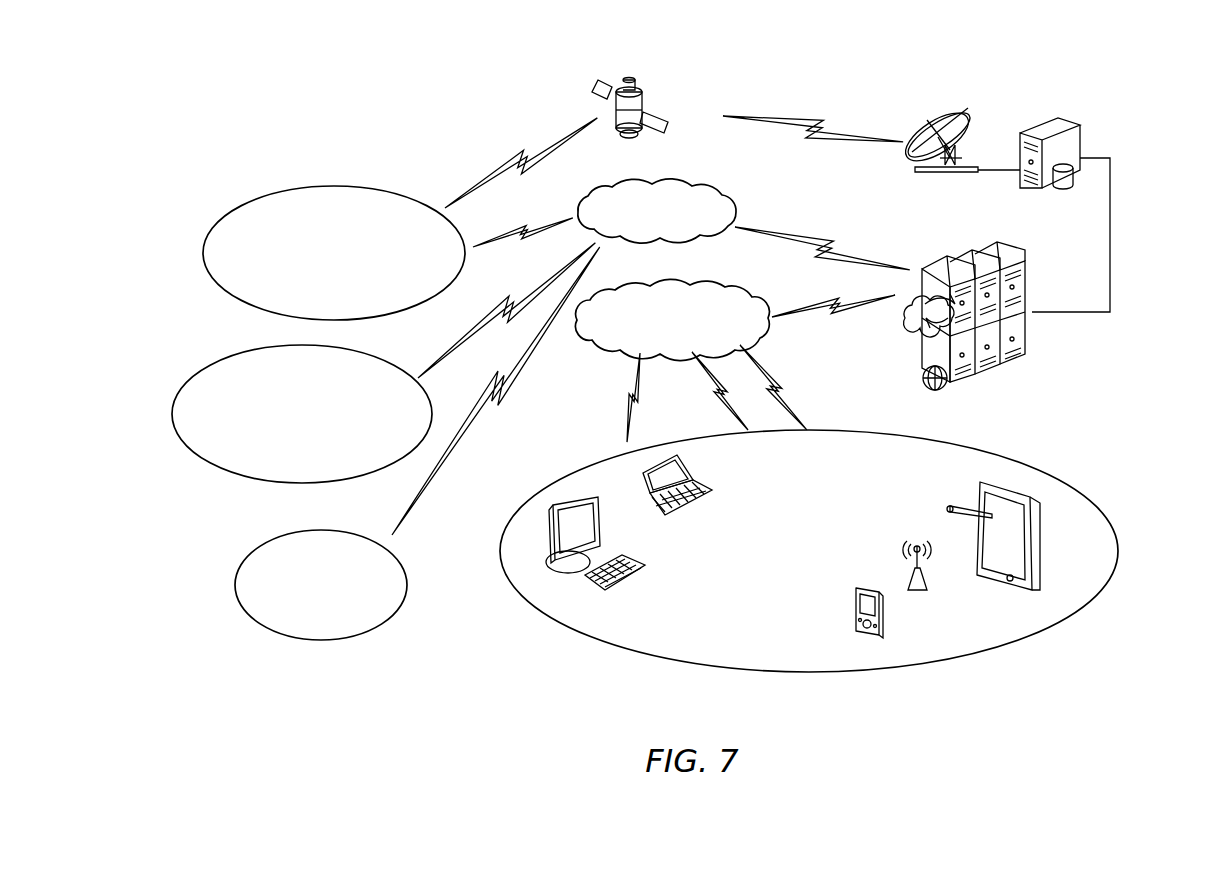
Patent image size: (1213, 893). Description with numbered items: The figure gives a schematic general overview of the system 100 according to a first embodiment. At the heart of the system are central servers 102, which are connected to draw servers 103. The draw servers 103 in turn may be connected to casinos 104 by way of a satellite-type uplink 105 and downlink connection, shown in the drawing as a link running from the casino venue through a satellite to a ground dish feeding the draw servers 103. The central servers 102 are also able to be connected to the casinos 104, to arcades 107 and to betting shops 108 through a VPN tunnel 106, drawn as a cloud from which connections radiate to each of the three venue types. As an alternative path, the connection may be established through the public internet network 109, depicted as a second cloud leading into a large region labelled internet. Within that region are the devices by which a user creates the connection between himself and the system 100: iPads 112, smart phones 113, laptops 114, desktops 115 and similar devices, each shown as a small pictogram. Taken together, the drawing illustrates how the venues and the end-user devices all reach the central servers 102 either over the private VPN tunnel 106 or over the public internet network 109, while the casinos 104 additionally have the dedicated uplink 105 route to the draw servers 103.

The system 100 is at (1022, 60).
The central servers 102 is at (1010, 352).
The draw servers 103 is at (1080, 138).
The casinos 104 is at (330, 184).
The uplink 105 is at (865, 118).
The VPN tunnel 106 is at (737, 197).
The arcades 107 is at (172, 414).
The betting shops 108 is at (250, 620).
The public internet network 109 is at (612, 650).
The iPads 112 is at (1020, 550).
The smart phones 113 is at (877, 618).
The laptops 114 is at (652, 482).
The desktops 115 is at (580, 538).